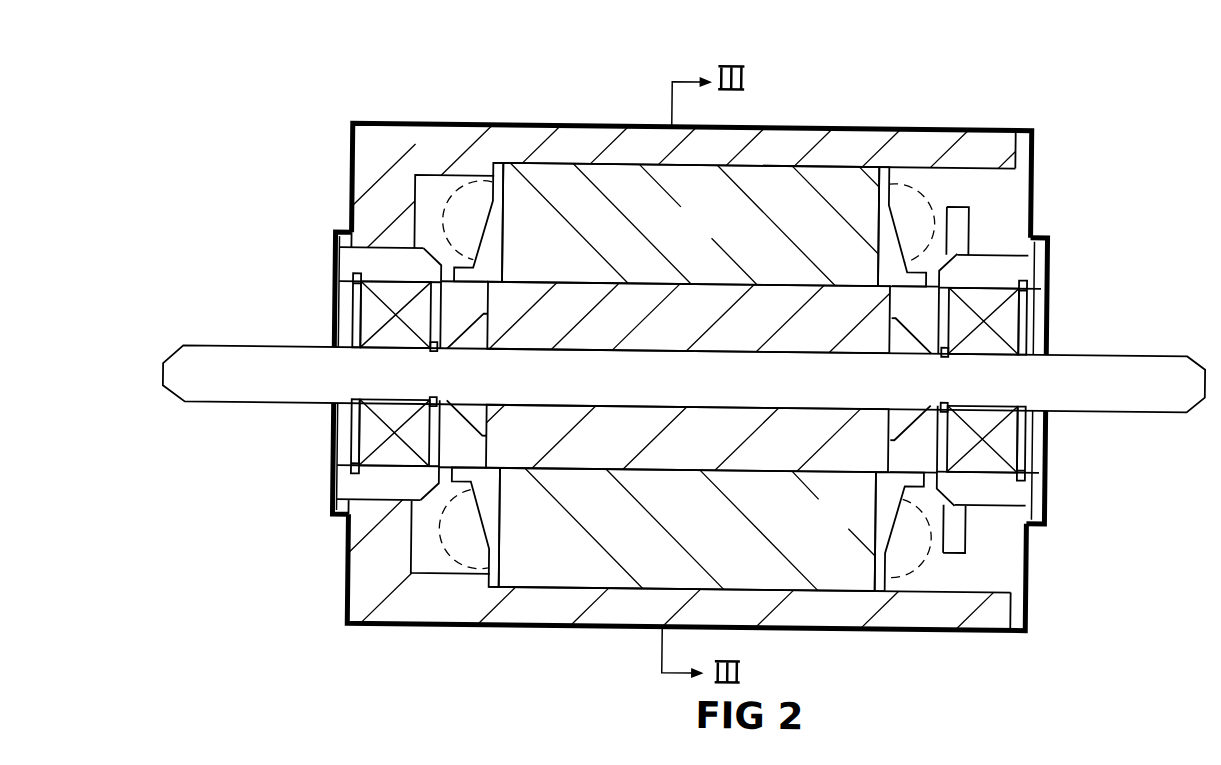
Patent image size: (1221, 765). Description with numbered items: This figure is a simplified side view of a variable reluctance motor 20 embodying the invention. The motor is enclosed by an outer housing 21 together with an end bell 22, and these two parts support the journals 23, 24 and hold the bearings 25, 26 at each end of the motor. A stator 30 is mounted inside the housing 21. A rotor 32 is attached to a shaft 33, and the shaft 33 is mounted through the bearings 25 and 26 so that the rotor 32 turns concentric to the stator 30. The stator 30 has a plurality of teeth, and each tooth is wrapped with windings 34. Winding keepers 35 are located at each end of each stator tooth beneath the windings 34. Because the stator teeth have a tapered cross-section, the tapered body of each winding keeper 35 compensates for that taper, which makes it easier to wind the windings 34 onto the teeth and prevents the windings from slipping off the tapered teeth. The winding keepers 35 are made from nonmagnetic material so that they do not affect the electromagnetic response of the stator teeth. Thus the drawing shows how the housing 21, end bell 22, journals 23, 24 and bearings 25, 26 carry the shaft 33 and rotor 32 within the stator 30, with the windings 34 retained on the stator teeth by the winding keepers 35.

The motor 20 is at (932, 111).
The outer housing 21 is at (429, 160).
The end bell 22 is at (984, 226).
The journal 23 is at (347, 261).
The journal 24 is at (1038, 259).
The bearing 25 is at (370, 317).
The bearing 26 is at (1005, 430).
The stator 30 is at (675, 250).
The rotor 32 is at (679, 453).
The shaft 33 is at (624, 393).
The windings 34 is at (443, 213).
The winding keepers 35 is at (495, 239).